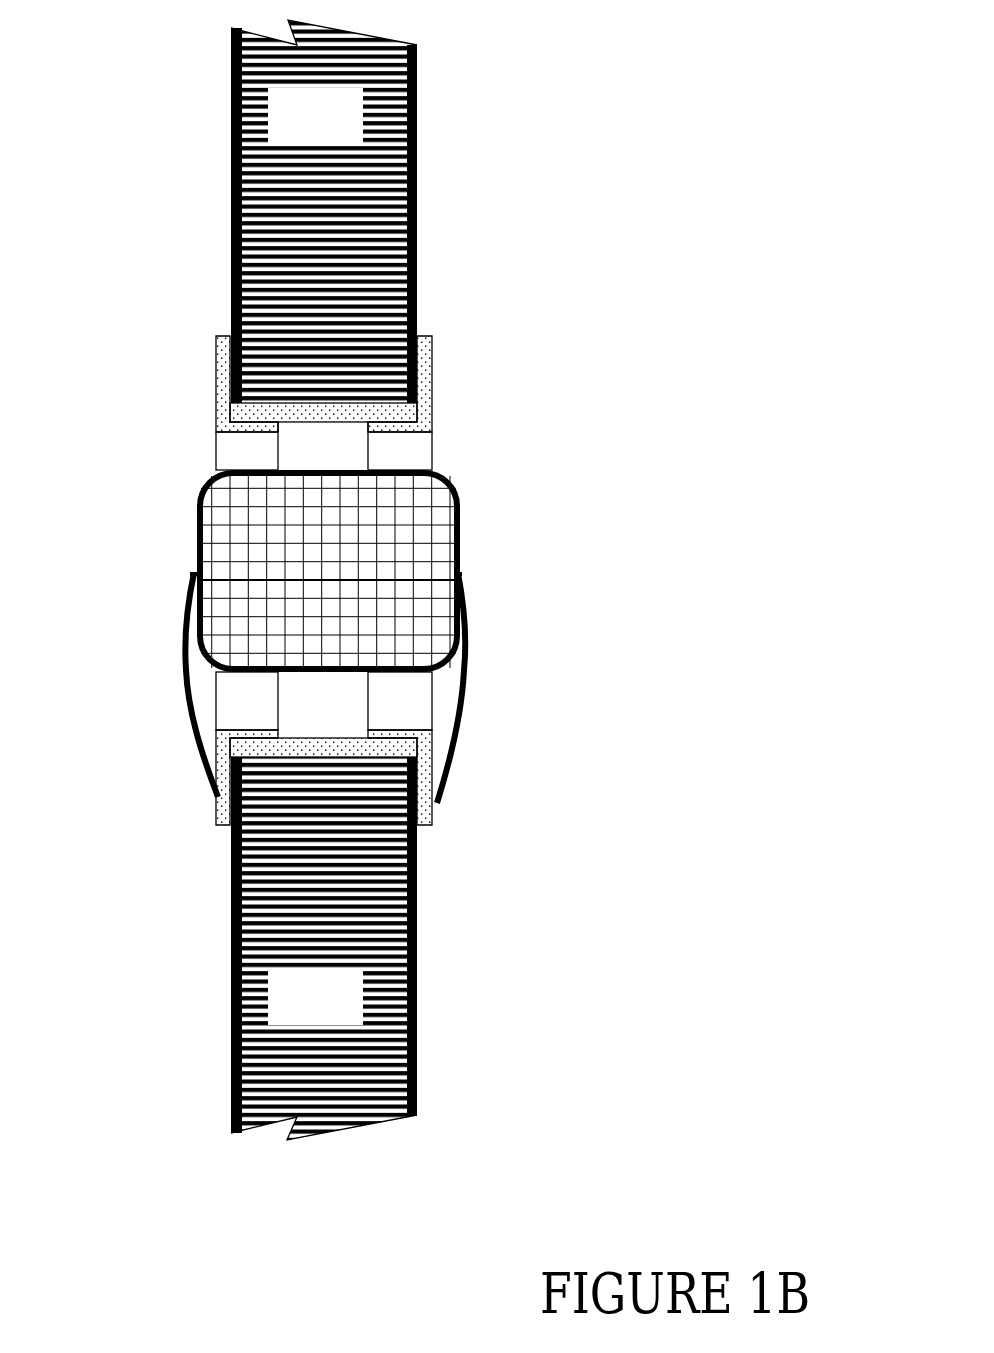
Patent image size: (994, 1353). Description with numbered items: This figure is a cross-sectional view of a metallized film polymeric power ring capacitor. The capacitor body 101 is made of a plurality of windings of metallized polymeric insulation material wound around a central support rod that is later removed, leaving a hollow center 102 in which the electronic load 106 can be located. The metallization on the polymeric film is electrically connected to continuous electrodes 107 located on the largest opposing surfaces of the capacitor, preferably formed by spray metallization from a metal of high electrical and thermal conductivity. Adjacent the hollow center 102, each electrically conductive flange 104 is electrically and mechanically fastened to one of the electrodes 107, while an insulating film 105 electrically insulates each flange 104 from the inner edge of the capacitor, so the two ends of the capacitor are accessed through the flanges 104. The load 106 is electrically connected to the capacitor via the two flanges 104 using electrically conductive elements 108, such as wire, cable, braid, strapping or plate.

The body 101 is at (324, 580).
The hollow center 102 is at (324, 576).
The electrically conductive flange 104 is at (217, 352).
The insulating film 105 is at (402, 412).
The electronic load 106 is at (413, 525).
The electrode 107 is at (232, 193).
The electrically conductive element 108 is at (185, 655).